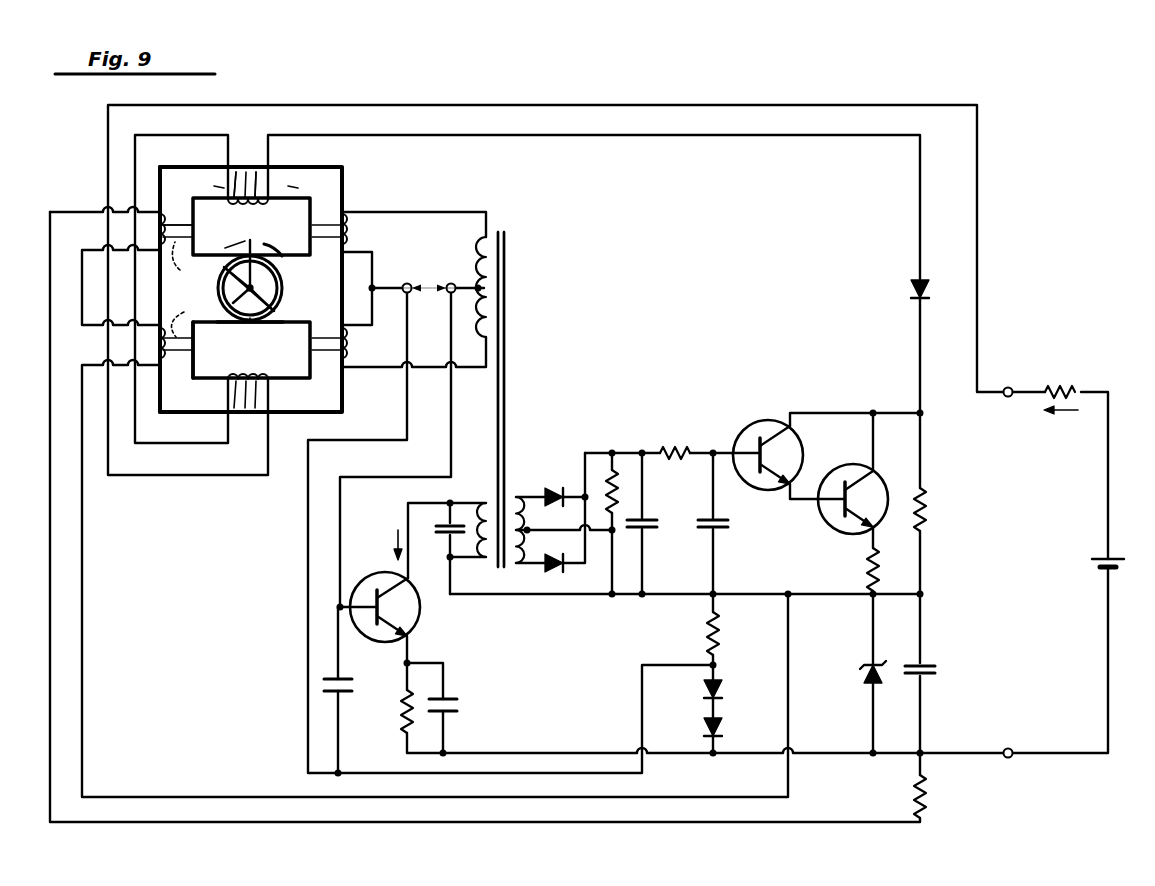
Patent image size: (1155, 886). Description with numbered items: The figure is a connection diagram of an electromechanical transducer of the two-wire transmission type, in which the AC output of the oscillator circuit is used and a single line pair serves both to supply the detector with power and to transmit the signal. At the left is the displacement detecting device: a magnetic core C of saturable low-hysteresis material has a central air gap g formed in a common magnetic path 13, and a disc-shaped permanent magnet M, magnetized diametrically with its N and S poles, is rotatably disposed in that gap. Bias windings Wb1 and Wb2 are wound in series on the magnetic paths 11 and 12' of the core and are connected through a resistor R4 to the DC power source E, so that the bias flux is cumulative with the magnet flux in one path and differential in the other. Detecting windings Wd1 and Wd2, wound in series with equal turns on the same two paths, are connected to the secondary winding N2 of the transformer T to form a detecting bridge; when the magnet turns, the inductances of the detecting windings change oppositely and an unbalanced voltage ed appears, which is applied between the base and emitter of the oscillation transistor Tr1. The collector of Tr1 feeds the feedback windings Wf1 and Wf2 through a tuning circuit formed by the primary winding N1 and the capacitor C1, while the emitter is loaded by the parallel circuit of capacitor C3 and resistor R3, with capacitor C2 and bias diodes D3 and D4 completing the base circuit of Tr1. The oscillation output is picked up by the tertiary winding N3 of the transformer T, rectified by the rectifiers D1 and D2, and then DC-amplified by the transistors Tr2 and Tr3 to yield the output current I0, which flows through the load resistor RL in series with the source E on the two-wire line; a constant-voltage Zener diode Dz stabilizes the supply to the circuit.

The magnetic path 11 is at (188, 172).
The magnetic path 12' is at (175, 413).
The common magnetic path 13 is at (262, 264).
The feedback winding Wf1 is at (248, 171).
The feedback winding Wf2 is at (248, 411).
The bias winding Wb1 is at (199, 227).
The bias winding Wb2 is at (199, 352).
The detecting winding Wd1 is at (365, 232).
The detecting winding Wd2 is at (365, 346).
The primary winding N1 is at (478, 517).
The secondary winding N2 is at (470, 287).
The tertiary winding N3 is at (520, 515).
The transformer T is at (499, 386).
The unbalanced voltage ed is at (429, 273).
The capacitor C1 is at (442, 542).
The capacitor C2 is at (344, 674).
The capacitor C3 is at (449, 719).
The resistor R3 is at (392, 711).
The resistor R4 is at (926, 794).
The load resistor RL is at (1060, 379).
The oscillation transistor Tr1 is at (414, 618).
The transistor Tr2 is at (745, 420).
The transistor Tr3 is at (850, 468).
The rectifier D1 is at (556, 510).
The rectifier D2 is at (556, 552).
The bias diode D3 is at (724, 690).
The bias diode D4 is at (724, 728).
The constant-voltage Zener diode Dz is at (864, 676).
The collector current Ic is at (383, 548).
The output current I0 is at (1061, 426).
The DC power source E is at (1119, 565).
The north pole N is at (220, 272).
The south pole S is at (280, 305).
The permanent magnet M is at (250, 334).
The air gap g is at (260, 330).
The magnetic core C is at (290, 361).